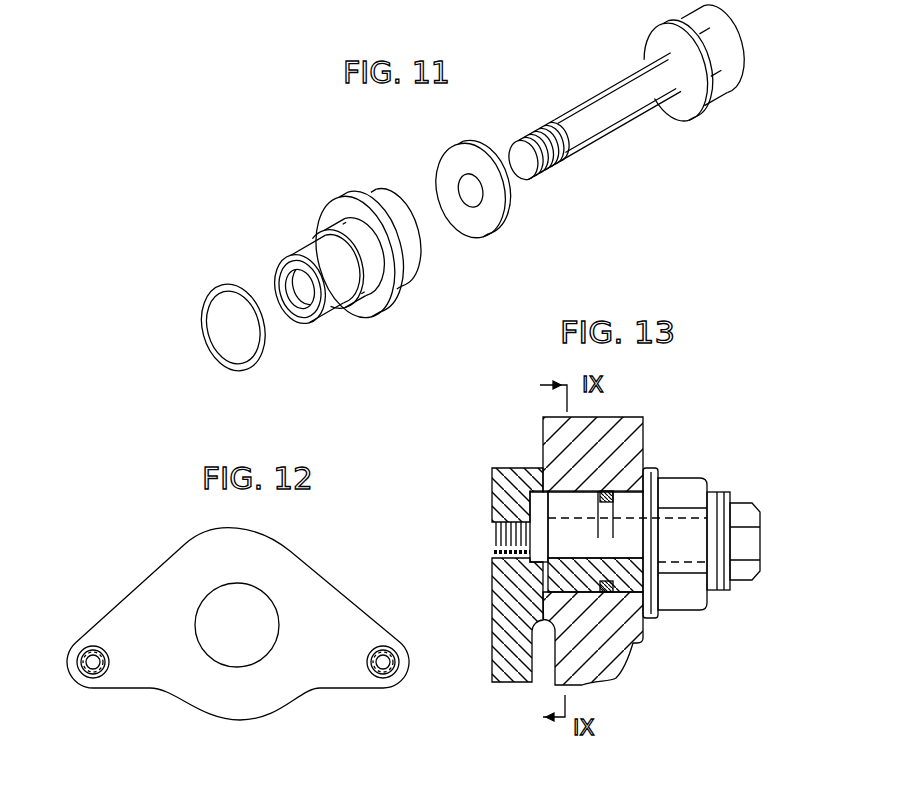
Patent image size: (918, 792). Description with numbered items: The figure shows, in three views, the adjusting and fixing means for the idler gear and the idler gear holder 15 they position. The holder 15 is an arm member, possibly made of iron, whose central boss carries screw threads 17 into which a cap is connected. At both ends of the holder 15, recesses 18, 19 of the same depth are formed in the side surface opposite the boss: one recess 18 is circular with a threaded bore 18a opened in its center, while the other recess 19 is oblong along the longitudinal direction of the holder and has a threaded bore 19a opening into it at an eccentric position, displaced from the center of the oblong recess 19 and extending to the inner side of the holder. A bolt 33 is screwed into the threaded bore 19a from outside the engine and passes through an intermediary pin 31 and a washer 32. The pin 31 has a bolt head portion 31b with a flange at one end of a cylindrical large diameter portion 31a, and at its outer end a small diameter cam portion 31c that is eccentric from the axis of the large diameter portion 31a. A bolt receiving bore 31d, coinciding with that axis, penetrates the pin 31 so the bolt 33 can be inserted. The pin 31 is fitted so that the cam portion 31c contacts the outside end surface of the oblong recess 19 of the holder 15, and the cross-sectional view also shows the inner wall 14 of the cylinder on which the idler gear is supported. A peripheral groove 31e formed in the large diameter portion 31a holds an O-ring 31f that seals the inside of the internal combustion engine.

In FIG. 13, the inner wall 14 is at (543, 432).
In FIG. 12, the idler gear holder 15 is at (158, 585).
In FIG. 13, the idler gear holder 15 is at (503, 655).
In FIG. 12, the screw threads 17 is at (237, 653).
In FIG. 12, the circular recess 18 is at (380, 643).
In FIG. 12, the threaded bore 18a is at (390, 670).
In FIG. 12, the oblong recess 19 is at (88, 644).
In FIG. 13, the oblong recess 19 is at (492, 577).
In FIG. 12, the threaded bore 19a is at (98, 670).
In FIG. 11, the intermediary pin 31 is at (287, 203).
In FIG. 13, the intermediary pin 31 is at (583, 563).
In FIG. 11, the large diameter portion 31a is at (342, 288).
In FIG. 13, the large diameter portion 31a is at (585, 503).
In FIG. 11, the bolt head portion 31b is at (420, 263).
In FIG. 13, the bolt head portion 31b is at (683, 495).
In FIG. 11, the cam portion 31c is at (283, 272).
In FIG. 13, the cam portion 31c is at (532, 500).
In FIG. 11, the bolt receiving bore 31d is at (297, 297).
In FIG. 13, the bolt receiving bore 31d is at (565, 516).
In FIG. 11, the peripheral groove 31e is at (378, 288).
In FIG. 13, the peripheral groove 31e is at (598, 535).
In FIG. 11, the O-ring 31f is at (263, 357).
In FIG. 13, the O-ring 31f is at (613, 682).
In FIG. 11, the washer 32 is at (487, 220).
In FIG. 13, the washer 32 is at (710, 588).
In FIG. 11, the bolt 33 is at (602, 123).
In FIG. 13, the bolt 33 is at (750, 541).